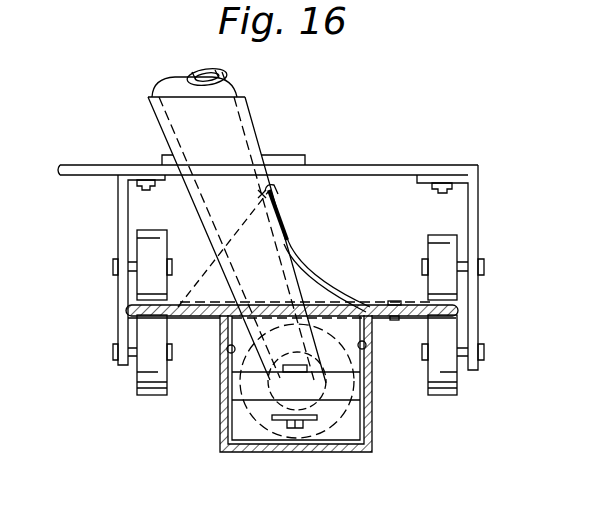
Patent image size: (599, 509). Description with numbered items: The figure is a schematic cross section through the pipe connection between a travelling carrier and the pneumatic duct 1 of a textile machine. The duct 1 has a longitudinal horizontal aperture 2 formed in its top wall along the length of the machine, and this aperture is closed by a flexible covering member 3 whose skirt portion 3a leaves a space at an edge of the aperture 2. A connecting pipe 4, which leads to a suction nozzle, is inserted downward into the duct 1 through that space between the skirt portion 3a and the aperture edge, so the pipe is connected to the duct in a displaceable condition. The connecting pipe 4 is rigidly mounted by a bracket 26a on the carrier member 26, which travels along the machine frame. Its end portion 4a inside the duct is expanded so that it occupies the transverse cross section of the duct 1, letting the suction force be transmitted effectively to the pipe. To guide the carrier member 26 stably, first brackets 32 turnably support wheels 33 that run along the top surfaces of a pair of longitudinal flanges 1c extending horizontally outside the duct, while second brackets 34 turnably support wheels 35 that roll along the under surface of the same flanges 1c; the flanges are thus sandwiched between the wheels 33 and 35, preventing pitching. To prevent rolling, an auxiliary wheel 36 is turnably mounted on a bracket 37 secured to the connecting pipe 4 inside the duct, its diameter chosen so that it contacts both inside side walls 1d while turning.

The pneumatic duct 1 is at (372, 420).
The longitudinal flanges 1c is at (196, 318).
The inside side walls 1d is at (228, 356).
The longitudinal horizontal aperture 2 is at (258, 322).
The flexible covering member 3 is at (320, 275).
The skirt portion 3a is at (277, 198).
The connecting pipe 4 is at (176, 84).
The end portion of the pipe 4a is at (272, 427).
The carrier member 26 is at (363, 167).
The bracket 26a is at (253, 128).
The first brackets 32 is at (118, 218).
The wheels 33 is at (143, 247).
The second brackets 34 is at (118, 297).
The wheels 35 is at (144, 377).
The auxiliary wheel 36 is at (260, 402).
The bracket 37 is at (316, 424).